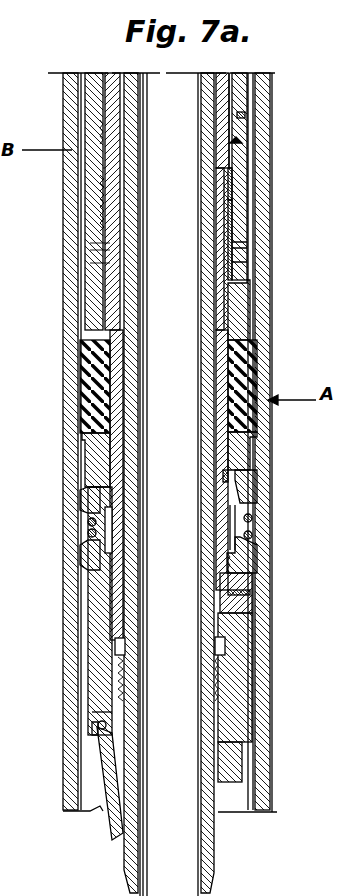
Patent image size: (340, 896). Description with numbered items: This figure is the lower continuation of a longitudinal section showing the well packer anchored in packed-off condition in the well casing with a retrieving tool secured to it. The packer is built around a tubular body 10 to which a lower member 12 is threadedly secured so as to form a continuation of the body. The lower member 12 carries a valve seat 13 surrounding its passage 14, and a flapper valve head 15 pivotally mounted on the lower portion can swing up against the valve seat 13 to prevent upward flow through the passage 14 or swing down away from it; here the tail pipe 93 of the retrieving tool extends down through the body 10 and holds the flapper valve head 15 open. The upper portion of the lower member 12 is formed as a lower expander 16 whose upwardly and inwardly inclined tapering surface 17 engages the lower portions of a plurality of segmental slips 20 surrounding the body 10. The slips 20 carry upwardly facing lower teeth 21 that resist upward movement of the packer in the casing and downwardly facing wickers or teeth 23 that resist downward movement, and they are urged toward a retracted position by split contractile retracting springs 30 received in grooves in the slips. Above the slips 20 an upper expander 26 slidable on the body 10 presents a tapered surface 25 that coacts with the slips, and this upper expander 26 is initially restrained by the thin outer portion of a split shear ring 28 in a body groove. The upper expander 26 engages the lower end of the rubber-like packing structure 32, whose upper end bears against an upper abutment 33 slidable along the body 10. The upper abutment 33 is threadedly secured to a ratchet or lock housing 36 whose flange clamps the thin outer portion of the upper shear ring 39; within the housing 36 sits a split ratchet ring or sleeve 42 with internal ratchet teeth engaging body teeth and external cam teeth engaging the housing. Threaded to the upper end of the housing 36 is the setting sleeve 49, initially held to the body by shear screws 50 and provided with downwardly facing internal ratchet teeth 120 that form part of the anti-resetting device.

The setting sleeve 49 is at (250, 92).
The shear screws 50 is at (238, 118).
The internal ratchet teeth 120 is at (233, 140).
The tubular body 10 is at (220, 158).
The upper shear ring 39 is at (206, 196).
The split ratchet ring or sleeve 42 is at (224, 217).
The ratchet or lock housing 36 is at (241, 215).
The upper abutment 33 is at (247, 305).
The tail pipe 93 is at (208, 382).
The packing structure 32 is at (250, 375).
The upper expander 26 is at (240, 452).
The split shear ring 28 is at (224, 478).
The downwardly facing wickers or teeth 23 is at (82, 505).
The tapered surface 25 is at (252, 500).
The segmental slips 20 is at (258, 522).
The lower teeth 21 is at (82, 555).
The retracting or retrieving springs 30 is at (254, 540).
The tapering surface 17 is at (256, 565).
The lower expander 16 is at (240, 598).
The lower member 12 is at (243, 668).
The valve seat 13 is at (232, 722).
The passage 14 is at (222, 753).
The flapper valve head 15 is at (110, 826).